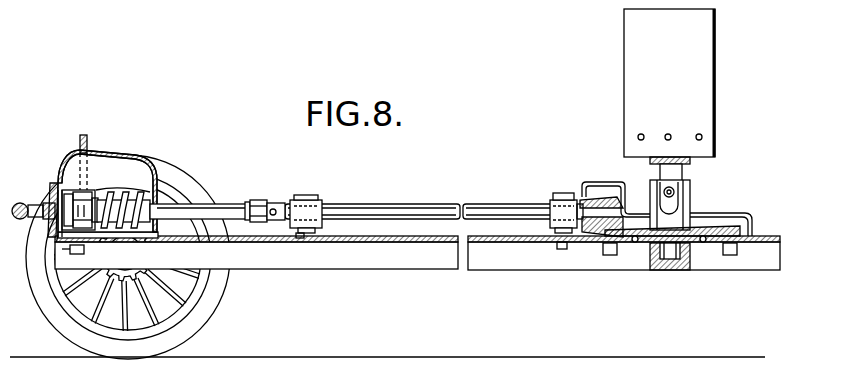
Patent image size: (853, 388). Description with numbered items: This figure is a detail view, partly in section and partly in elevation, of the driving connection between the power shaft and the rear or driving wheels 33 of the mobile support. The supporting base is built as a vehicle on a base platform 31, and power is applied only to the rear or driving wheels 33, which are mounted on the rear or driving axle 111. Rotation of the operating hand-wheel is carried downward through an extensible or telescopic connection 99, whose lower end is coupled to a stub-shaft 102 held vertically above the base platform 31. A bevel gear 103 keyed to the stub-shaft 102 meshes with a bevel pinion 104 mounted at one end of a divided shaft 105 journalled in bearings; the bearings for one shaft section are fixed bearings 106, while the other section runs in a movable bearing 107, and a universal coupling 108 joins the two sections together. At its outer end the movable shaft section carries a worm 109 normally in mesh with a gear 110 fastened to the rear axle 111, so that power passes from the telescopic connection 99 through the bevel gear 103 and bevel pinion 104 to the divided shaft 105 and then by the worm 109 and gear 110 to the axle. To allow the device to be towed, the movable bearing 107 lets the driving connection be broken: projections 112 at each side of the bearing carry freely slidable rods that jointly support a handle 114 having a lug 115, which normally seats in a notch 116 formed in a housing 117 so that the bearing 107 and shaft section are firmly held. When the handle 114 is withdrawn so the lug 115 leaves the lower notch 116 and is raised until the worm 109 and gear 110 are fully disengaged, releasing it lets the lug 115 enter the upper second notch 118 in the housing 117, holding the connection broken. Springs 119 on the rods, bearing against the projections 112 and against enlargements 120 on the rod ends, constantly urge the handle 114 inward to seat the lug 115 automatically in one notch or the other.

The base platform 31 is at (383, 243).
The rear or driving wheels 33 is at (208, 312).
The extensible or telescopic connection 99 is at (695, 72).
The stub-shaft 102 is at (690, 210).
The bevel gear 103 is at (693, 253).
The bevel pinion 104 is at (593, 197).
The divided shaft 105 is at (422, 207).
The fixed bearings 106 is at (317, 195).
The movable bearing 107 is at (72, 188).
The universal coupling 108 is at (262, 202).
The worm 109 is at (149, 168).
The gear 110 is at (130, 262).
The rear or driving axle 111 is at (182, 284).
The projections 112 is at (82, 195).
The handle 114 is at (13, 200).
The lug 115 is at (52, 185).
The notch 116 is at (92, 188).
The housing 117 is at (76, 188).
The second notch 118 is at (56, 182).
The springs 119 is at (112, 190).
The enlargements 120 is at (112, 162).